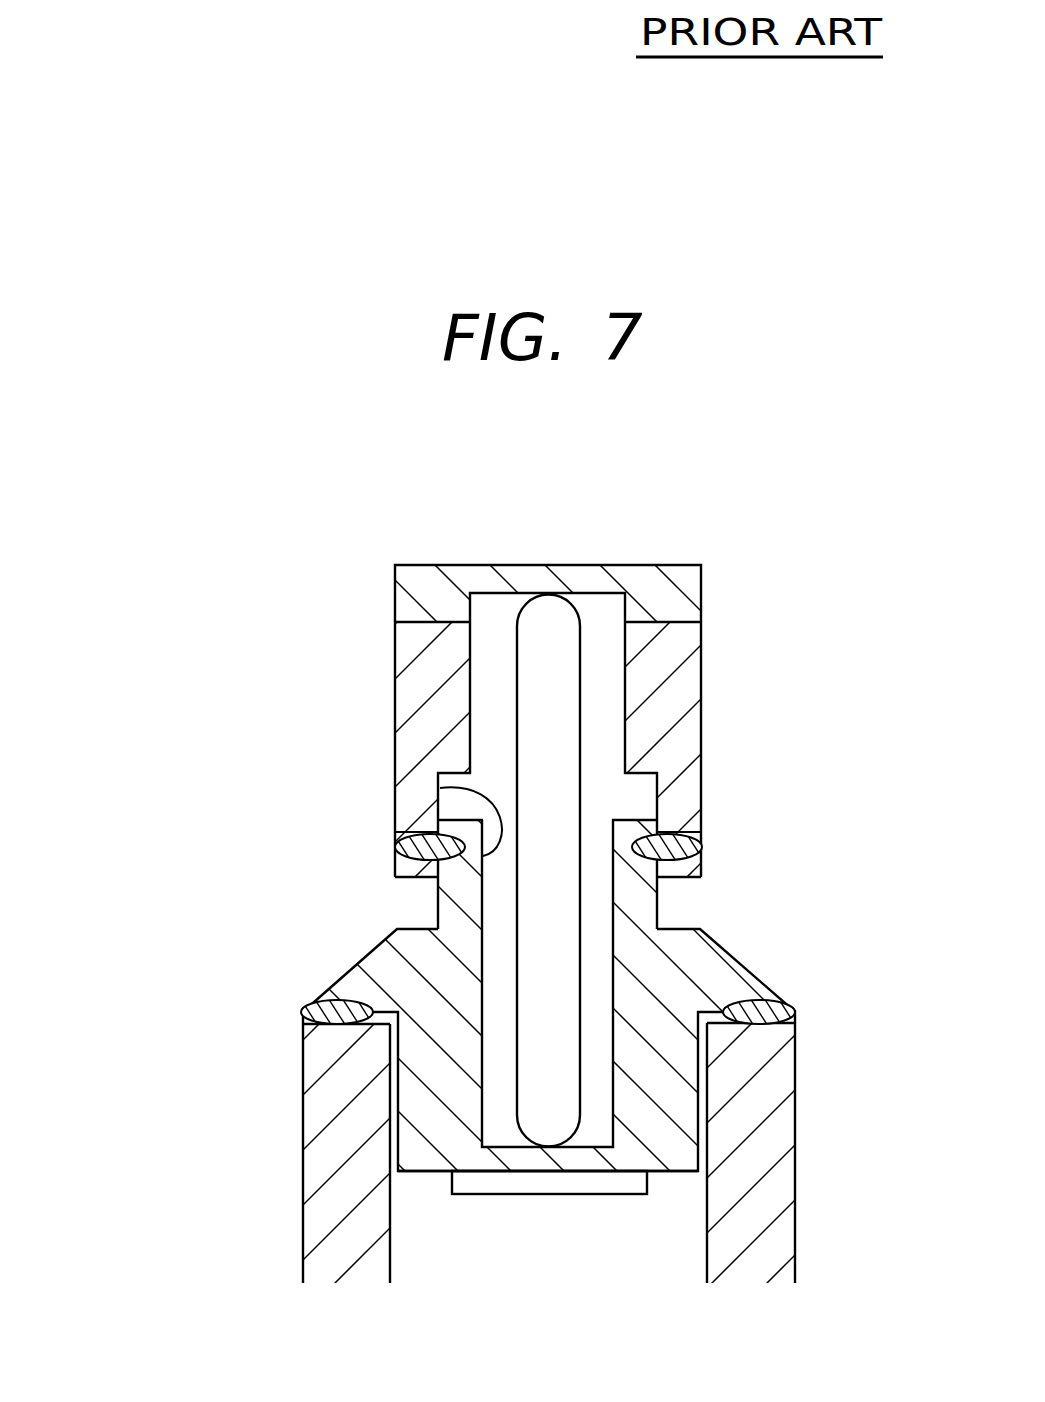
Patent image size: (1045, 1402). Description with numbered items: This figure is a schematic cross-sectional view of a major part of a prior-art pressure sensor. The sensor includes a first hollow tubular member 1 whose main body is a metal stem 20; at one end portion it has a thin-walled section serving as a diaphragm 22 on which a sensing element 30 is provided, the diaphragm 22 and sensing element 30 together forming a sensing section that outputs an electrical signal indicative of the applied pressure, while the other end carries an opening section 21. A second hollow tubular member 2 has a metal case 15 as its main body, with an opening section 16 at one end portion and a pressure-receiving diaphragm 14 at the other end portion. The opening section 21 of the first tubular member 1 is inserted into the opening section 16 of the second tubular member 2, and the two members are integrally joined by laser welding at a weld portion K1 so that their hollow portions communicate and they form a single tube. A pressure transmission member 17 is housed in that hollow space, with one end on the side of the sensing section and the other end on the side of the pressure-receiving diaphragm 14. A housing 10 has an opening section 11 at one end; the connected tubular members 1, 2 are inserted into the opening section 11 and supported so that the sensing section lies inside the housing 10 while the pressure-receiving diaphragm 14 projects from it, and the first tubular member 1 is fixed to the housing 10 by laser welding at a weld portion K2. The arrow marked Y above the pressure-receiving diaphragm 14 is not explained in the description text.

The first hollow tubular member 1 is at (129, 1081).
The second hollow tubular member 2 is at (802, 603).
The housing 10 is at (316, 1208).
The opening section 11 is at (707, 1047).
The pressure-receiving diaphragm 14 is at (667, 600).
The metal case 15 is at (677, 690).
The opening section 16 is at (658, 868).
The pressure transmission member 17 is at (557, 928).
The metal stem 20 is at (435, 1068).
The opening section 21 is at (440, 788).
The diaphragm 22 is at (540, 1163).
The sensing element 30 is at (465, 1183).
The weld portion K1 is at (395, 848).
The weld portion K2 is at (307, 1005).
The swing direction Y is at (720, 538).